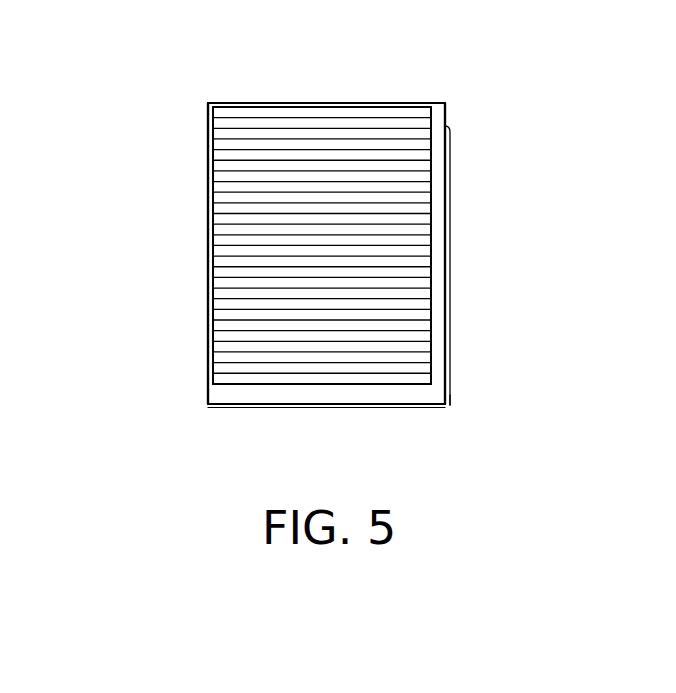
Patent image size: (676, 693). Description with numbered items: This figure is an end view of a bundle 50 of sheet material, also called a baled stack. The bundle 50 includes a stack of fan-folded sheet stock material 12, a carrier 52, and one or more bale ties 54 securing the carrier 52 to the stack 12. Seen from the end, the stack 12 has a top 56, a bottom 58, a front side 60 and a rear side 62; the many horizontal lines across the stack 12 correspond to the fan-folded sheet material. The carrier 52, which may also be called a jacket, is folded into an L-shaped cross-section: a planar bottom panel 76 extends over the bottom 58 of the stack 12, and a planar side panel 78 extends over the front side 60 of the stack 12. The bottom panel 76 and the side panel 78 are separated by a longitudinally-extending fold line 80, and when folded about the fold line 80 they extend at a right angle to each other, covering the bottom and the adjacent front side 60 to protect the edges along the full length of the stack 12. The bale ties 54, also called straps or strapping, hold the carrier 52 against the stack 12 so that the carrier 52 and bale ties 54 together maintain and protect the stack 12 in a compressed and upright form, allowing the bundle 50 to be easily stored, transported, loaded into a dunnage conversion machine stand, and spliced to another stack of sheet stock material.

The bundle 50 is at (183, 93).
The carrier 52 is at (437, 117).
The bale ties 54 is at (232, 103).
The top 56 is at (338, 101).
The bottom 58 is at (322, 388).
The front side 60 is at (440, 233).
The rear side 62 is at (207, 245).
The stack of fan-folded sheet stock material 12 is at (283, 313).
The bottom panel 76 is at (358, 395).
The side panel 78 is at (437, 292).
The fold line 80 is at (450, 405).